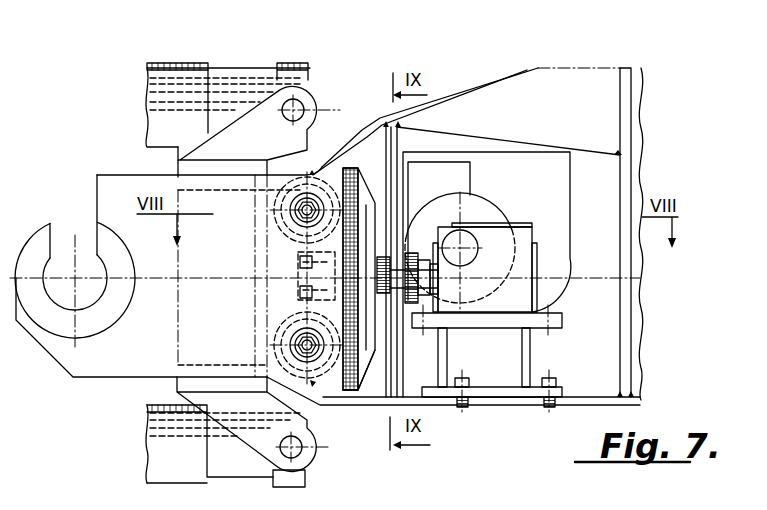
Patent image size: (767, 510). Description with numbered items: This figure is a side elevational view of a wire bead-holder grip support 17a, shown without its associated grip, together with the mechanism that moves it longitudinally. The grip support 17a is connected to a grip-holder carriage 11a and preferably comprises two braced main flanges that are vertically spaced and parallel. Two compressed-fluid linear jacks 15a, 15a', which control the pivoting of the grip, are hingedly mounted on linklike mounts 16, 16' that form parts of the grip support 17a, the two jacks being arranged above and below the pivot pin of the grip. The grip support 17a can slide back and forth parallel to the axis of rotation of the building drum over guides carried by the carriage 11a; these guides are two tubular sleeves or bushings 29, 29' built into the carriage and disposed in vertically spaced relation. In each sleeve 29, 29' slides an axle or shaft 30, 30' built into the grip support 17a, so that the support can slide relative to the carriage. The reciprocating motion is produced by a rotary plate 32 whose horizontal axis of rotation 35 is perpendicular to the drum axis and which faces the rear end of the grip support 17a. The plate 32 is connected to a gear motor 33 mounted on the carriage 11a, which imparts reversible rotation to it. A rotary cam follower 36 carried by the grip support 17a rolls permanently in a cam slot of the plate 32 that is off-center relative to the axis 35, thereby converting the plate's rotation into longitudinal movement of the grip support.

The grip-holder carriage 11a is at (603, 333).
The compressed-fluid linear jack 15a is at (205, 105).
The compressed-fluid linear jack 15a' is at (199, 444).
The linklike mount 16 is at (251, 130).
The linklike mount 16' is at (263, 432).
The grip support 17a is at (133, 362).
The tubular sleeve 29 is at (351, 266).
The tubular sleeve 29' is at (342, 393).
The shaft 30 is at (285, 278).
The shaft 30' is at (286, 345).
The rotary plate 32 is at (380, 357).
The gear motor 33 is at (522, 272).
The horizontal axis of rotation 35 is at (402, 267).
The rotary cam follower 36 is at (347, 274).